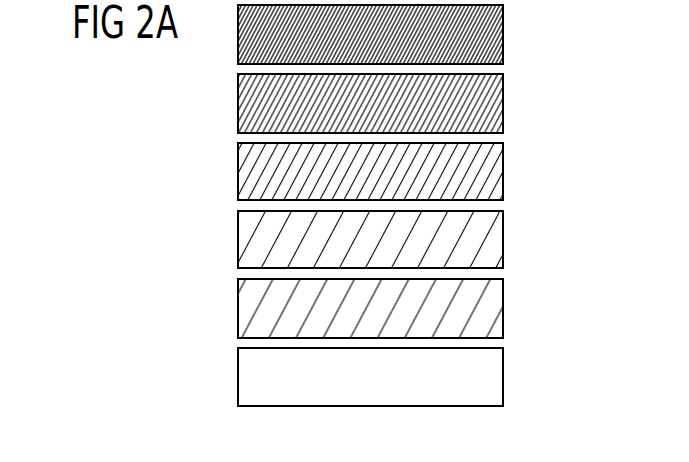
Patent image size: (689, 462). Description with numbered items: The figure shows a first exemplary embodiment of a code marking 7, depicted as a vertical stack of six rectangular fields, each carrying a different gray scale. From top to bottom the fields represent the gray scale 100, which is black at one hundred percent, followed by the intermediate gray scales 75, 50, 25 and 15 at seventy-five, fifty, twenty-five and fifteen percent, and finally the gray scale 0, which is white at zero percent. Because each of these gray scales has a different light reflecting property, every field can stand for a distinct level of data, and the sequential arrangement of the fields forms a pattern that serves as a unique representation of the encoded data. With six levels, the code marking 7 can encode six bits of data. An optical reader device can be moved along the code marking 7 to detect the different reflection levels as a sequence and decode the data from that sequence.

The code marking 7 is at (204, 157).
The gray scale (black, 100%) 100 is at (503, 30).
The gray scale (75%) 75 is at (503, 99).
The gray scale (50%) 50 is at (503, 168).
The gray scale (25%) 25 is at (503, 236).
The gray scale (15%) 15 is at (503, 305).
The gray scale (white, 0%) 0 is at (503, 374).